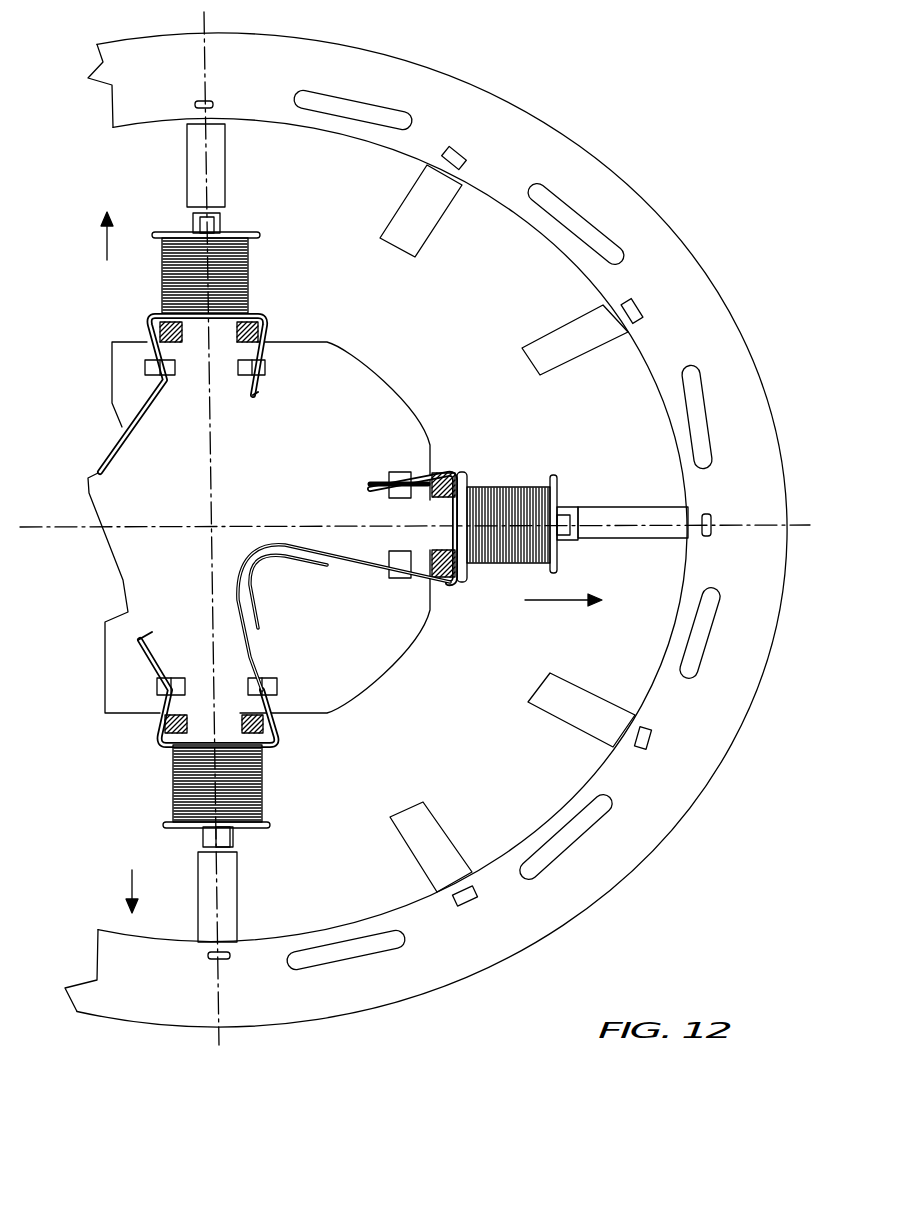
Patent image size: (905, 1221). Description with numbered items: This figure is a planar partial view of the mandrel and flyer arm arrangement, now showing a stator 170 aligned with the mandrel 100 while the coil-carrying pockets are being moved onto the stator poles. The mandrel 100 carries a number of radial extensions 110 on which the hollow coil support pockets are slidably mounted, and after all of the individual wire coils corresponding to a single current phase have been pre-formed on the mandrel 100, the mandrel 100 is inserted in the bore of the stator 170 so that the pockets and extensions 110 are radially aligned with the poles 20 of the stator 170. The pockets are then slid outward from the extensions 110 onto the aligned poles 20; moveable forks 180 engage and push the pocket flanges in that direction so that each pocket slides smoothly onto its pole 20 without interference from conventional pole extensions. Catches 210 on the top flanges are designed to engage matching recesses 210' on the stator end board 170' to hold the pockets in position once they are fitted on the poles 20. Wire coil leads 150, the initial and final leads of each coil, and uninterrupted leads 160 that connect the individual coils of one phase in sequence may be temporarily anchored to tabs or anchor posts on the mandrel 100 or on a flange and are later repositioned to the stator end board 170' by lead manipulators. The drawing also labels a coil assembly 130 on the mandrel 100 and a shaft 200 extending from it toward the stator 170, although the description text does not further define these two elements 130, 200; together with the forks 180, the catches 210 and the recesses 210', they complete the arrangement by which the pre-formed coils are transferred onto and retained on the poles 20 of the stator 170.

The pole 20 is at (213, 160).
The mandrel 100 is at (100, 468).
The radial extension 110 is at (222, 220).
The solenoid actuator 130 is at (497, 466).
The wire coil lead 150 is at (268, 382).
The uninterrupted lead 160 is at (260, 546).
The stator 170 is at (393, 520).
The stator end board 170' is at (441, 530).
The moveable fork 180 is at (152, 340).
The plunger shaft 200 is at (613, 510).
The catch 210 is at (382, 506).
The matching recess 210' is at (484, 533).